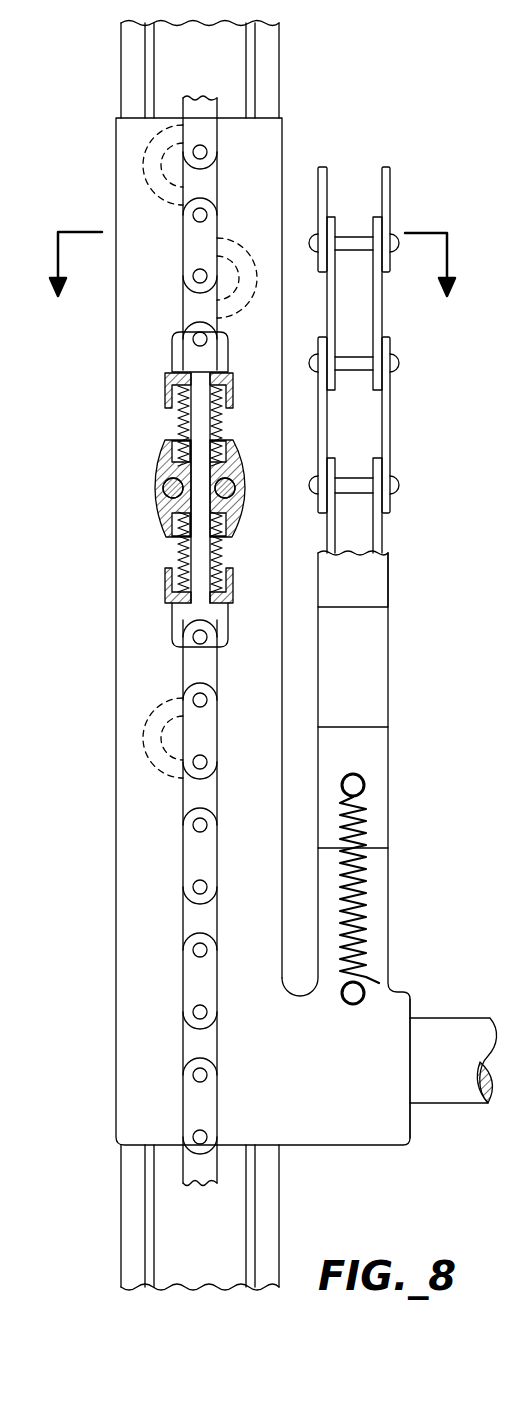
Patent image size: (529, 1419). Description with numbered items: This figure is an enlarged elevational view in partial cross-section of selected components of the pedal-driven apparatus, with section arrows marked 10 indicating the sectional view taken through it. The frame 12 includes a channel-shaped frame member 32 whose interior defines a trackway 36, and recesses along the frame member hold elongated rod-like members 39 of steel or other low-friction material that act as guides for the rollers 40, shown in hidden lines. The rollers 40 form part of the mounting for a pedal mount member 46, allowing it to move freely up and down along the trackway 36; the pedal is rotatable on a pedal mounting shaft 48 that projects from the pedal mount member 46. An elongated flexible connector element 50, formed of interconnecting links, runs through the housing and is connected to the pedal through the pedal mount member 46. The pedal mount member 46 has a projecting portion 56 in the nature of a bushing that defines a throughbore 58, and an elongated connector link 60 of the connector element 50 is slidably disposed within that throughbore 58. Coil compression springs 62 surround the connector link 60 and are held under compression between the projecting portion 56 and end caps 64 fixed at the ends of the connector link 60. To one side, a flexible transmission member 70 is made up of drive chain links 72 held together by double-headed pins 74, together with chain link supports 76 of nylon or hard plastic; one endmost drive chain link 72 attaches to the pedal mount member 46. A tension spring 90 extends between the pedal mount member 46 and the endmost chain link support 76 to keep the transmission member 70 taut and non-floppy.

The section line indicator 10 is at (253, 276).
The frame 12 is at (268, 102).
The frame member 32 is at (130, 85).
The trackway 36 is at (215, 32).
The rod-like member 39 is at (148, 28).
The roller 40 is at (143, 165).
The pedal mount member 46 is at (395, 1005).
The pedal mounting shaft 48 is at (450, 1020).
The elongated flexible connector element 50 is at (195, 250).
The projecting portion 56 is at (155, 505).
The throughbore 58 is at (233, 525).
The connector link 60 is at (195, 430).
The coil compression spring 62 is at (172, 548).
The end cap 64 is at (233, 392).
The flexible transmission member 70 is at (389, 587).
The drive chain link 72 is at (390, 422).
The double-headed pin 74 is at (398, 487).
The chain link support 76 is at (382, 650).
The tension spring 90 is at (365, 815).